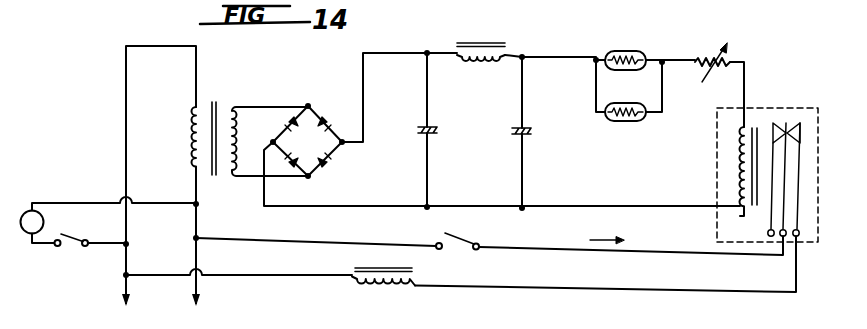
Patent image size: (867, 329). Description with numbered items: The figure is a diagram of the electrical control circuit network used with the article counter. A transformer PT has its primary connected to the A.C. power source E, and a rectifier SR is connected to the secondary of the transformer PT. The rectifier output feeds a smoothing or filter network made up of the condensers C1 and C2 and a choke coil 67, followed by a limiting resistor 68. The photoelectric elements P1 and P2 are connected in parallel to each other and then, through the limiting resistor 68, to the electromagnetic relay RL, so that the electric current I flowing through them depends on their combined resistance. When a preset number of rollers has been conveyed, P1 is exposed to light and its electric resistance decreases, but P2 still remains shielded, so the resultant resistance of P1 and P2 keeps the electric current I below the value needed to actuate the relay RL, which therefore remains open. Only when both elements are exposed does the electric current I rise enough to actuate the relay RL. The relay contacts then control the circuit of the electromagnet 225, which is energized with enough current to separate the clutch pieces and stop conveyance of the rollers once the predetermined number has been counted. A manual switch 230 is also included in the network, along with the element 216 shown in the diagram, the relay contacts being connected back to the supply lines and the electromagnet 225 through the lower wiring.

The choke coil 67 is at (481, 43).
The limiting resistor 68 is at (707, 61).
The motor 216 is at (107, 231).
The manual switch 230 is at (91, 252).
The electromagnet 225 is at (383, 288).
The transformer PT is at (250, 128).
The rectifier SR is at (307, 133).
The condenser C1 is at (433, 130).
The condenser C2 is at (532, 132).
The photoelectric element P1 is at (621, 51).
The photoelectric element P2 is at (629, 90).
The electromagnetic relay RL is at (767, 166).
The A.C. power source E is at (157, 309).
The electric current I is at (611, 243).